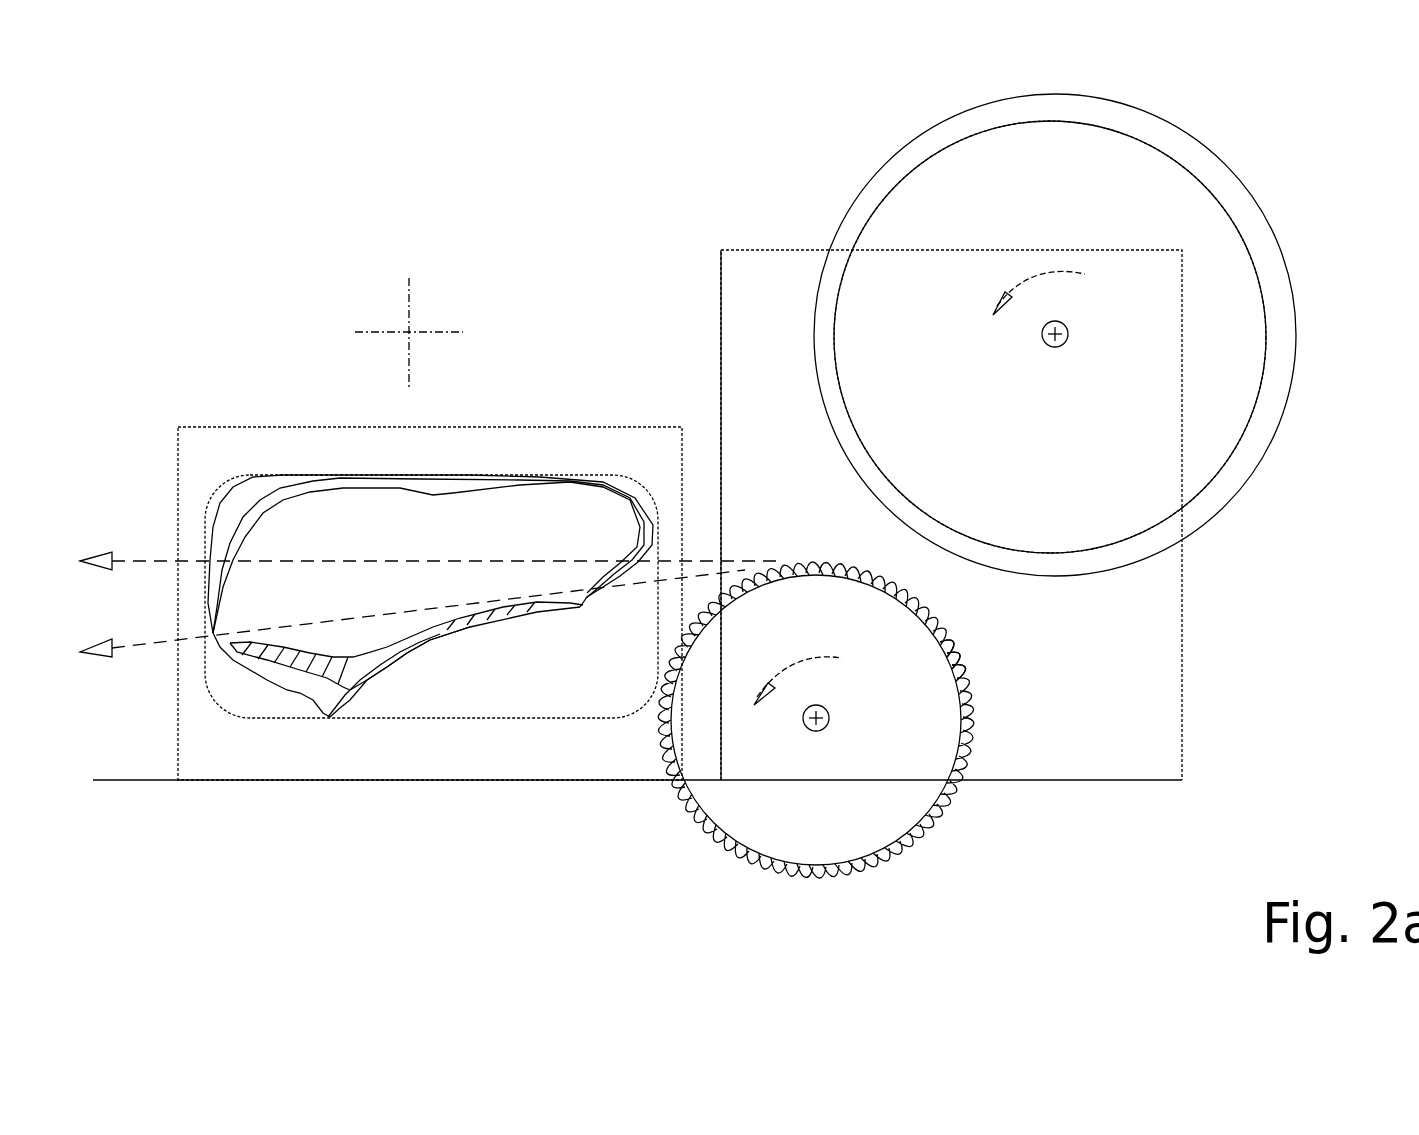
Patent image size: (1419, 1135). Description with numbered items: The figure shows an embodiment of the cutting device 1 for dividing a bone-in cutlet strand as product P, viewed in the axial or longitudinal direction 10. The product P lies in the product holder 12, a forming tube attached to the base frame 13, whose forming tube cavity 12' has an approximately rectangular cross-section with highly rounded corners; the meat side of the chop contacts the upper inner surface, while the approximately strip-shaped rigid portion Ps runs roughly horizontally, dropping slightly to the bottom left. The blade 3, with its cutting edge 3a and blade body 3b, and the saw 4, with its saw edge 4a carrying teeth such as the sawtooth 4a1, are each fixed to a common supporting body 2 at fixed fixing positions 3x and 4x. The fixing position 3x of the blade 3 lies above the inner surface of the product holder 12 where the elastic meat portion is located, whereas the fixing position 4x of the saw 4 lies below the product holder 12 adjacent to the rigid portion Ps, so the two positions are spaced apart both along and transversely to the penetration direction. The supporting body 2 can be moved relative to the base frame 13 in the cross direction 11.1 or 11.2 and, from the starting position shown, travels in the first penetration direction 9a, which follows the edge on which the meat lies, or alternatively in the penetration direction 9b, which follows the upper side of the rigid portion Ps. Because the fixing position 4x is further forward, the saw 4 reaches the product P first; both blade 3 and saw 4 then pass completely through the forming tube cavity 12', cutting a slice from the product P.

The cutting device 1 is at (568, 258).
The supporting body 2 is at (951, 515).
The blade 3 is at (1258, 167).
The cutting edge 3a is at (1093, 93).
The blade body 3b is at (1050, 337).
The fixing position 3x is at (1060, 342).
The saw 4 is at (697, 830).
The saw edge 4a is at (973, 720).
The sawtooth 4a1 is at (965, 675).
The fixing position 4x is at (853, 687).
The longitudinal direction 10 is at (919, 488).
The penetration direction 9a is at (132, 558).
The penetration direction 9b is at (138, 652).
The cross direction 11.1 is at (410, 318).
The cross direction 11.2 is at (418, 336).
The product holder 12 is at (430, 544).
The forming tube cavity 12' is at (431, 596).
The base frame 13 is at (254, 782).
The product P is at (480, 628).
The rigid portion Ps is at (400, 655).